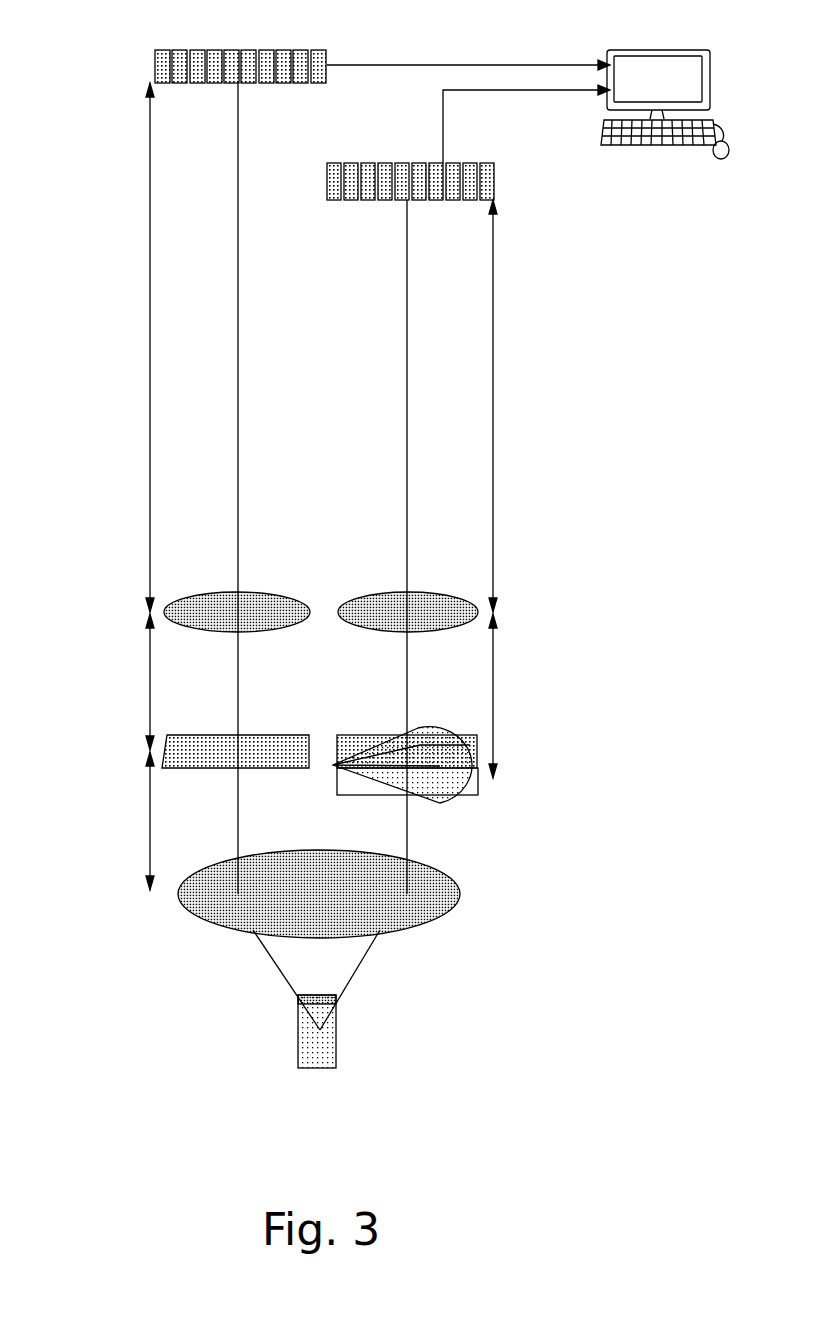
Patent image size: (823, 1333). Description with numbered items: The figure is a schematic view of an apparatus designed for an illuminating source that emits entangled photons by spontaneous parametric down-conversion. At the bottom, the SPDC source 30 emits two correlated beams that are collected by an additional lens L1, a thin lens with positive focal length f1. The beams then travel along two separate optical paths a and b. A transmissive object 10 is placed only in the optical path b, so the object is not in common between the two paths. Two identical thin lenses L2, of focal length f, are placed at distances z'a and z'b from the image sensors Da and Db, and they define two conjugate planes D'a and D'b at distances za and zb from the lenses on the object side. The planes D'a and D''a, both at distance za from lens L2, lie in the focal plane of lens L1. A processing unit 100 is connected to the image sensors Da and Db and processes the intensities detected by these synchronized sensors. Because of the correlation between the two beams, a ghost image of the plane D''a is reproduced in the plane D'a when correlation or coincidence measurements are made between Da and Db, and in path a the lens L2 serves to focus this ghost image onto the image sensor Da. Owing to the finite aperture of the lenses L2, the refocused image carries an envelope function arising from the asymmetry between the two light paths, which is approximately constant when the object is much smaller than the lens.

The image sensor Da is at (157, 62).
The image sensor Db is at (358, 203).
The optical path a is at (238, 220).
The optical path b is at (407, 312).
The processing unit 100 is at (655, 128).
The distance z'a is at (105, 347).
The distance z'b is at (542, 406).
The distance za is at (150, 688).
The distance zb is at (493, 693).
The focal length f1 is at (150, 836).
The lenses L2 is at (378, 608).
The conjugate plane D'a is at (235, 717).
The plane D''a is at (407, 717).
The conjugate plane D'b is at (366, 805).
The additional lens L1 is at (218, 915).
The transmissive object 10 is at (455, 812).
The SPDC source 30 is at (330, 1042).